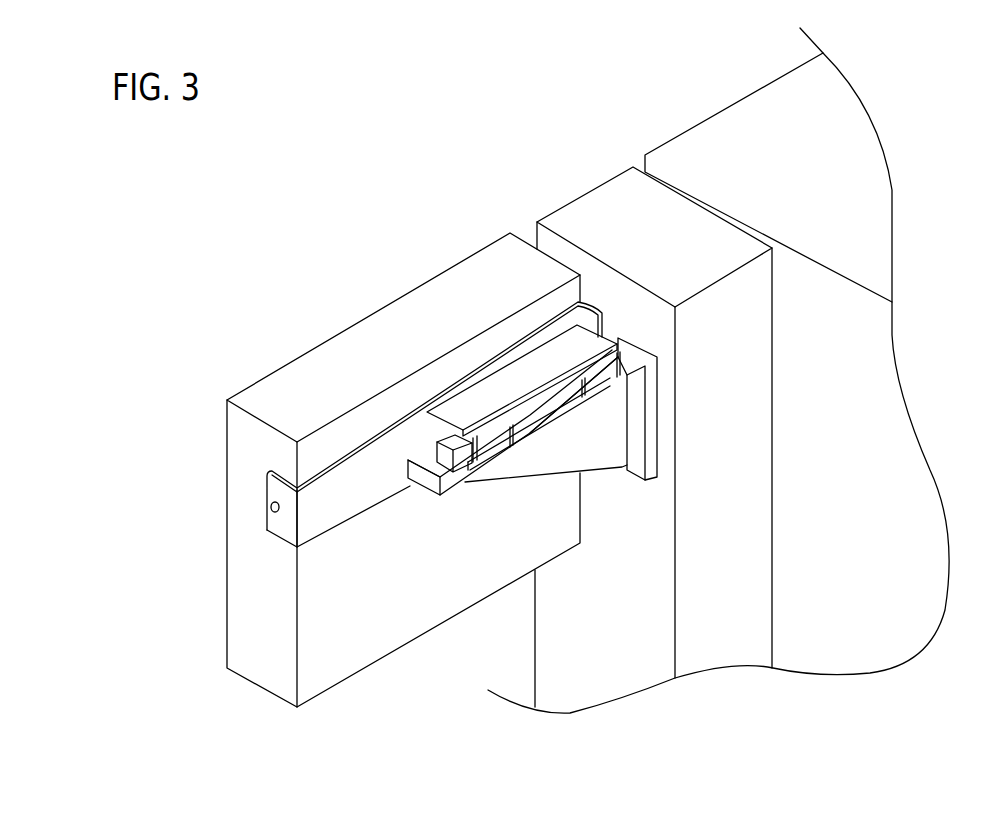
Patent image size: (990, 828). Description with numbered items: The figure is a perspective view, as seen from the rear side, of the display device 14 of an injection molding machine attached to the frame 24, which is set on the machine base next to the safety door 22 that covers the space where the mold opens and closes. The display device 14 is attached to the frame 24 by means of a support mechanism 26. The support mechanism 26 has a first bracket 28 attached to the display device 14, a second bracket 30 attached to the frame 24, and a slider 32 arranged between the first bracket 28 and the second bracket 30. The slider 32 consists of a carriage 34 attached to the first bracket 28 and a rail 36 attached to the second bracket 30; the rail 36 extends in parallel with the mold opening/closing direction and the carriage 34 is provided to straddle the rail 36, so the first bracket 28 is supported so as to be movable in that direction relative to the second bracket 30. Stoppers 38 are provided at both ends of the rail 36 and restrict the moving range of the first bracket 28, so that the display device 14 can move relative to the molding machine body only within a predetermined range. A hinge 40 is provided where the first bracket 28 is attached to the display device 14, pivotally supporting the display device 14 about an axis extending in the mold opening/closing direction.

The display device 14 is at (380, 333).
The safety door 22 is at (733, 127).
The frame 24 is at (595, 210).
The support mechanism 26 is at (488, 452).
The first bracket 28 is at (328, 520).
The second bracket 30 is at (600, 452).
The slider 32 is at (528, 437).
The carriage 34 is at (492, 440).
The rail 36 is at (538, 412).
The stoppers 38 is at (433, 462).
The hinge 40 is at (270, 503).